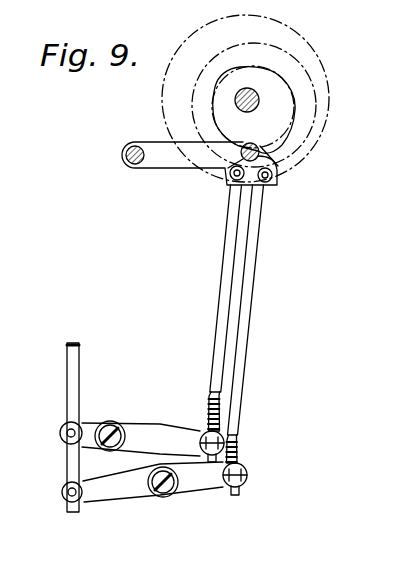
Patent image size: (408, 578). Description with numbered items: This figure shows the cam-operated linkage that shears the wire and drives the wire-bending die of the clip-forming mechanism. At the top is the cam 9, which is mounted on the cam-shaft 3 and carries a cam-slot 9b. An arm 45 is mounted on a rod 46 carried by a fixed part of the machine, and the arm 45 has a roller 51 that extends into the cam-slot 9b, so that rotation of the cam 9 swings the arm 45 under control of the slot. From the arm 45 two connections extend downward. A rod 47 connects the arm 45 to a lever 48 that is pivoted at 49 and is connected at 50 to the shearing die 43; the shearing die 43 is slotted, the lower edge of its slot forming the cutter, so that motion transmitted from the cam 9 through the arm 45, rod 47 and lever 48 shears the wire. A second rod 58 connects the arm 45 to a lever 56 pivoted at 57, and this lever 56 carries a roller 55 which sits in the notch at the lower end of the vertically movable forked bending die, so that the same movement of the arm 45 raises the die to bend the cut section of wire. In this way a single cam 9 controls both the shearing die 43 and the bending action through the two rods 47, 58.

The cam 9 is at (200, 40).
The cam-slot 9b is at (274, 62).
The cam-shaft 3 is at (259, 100).
The roller 51 is at (256, 147).
The arm 45 is at (170, 162).
The rod 46 is at (125, 163).
The rod 47 is at (221, 290).
The rod 58 is at (256, 320).
The lever 48 is at (185, 446).
The shearing die 43 is at (58, 338).
The connection point 50 is at (60, 435).
The pivot 49 is at (112, 422).
The lever 56 is at (153, 482).
The pivot 57 is at (173, 491).
The roller 55 is at (85, 503).